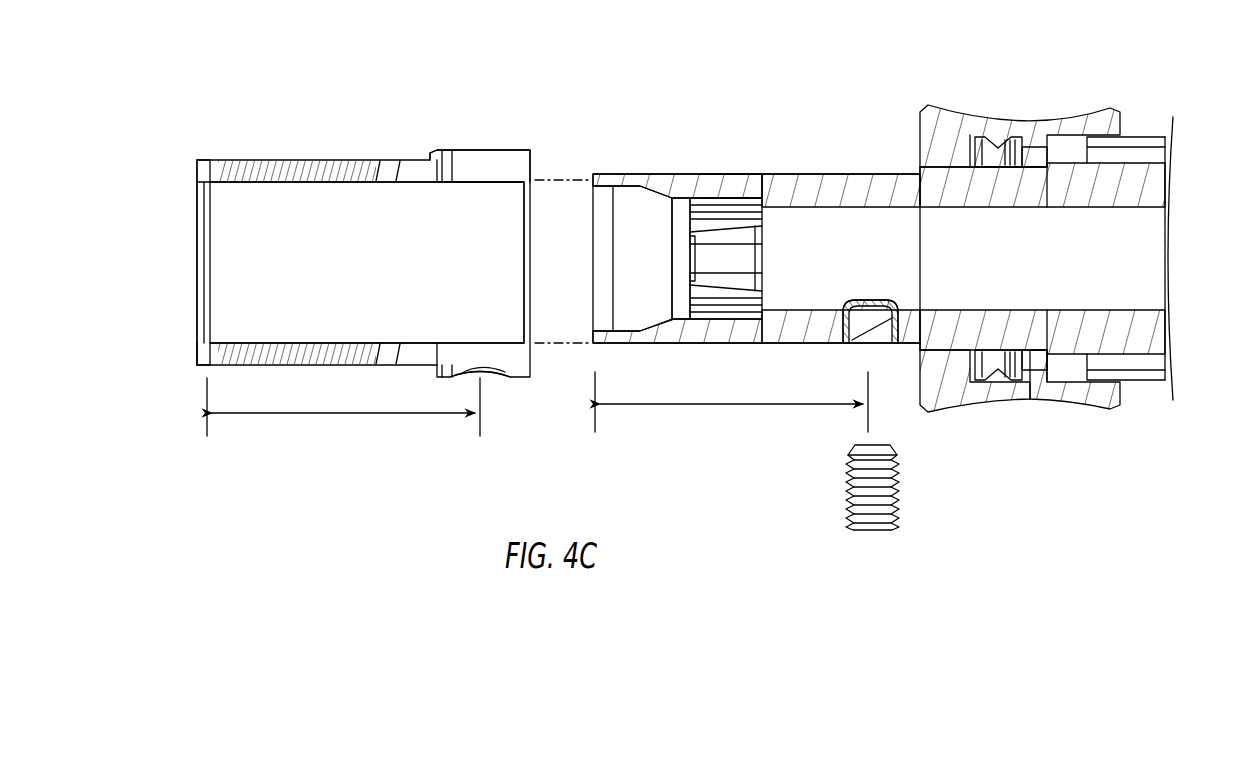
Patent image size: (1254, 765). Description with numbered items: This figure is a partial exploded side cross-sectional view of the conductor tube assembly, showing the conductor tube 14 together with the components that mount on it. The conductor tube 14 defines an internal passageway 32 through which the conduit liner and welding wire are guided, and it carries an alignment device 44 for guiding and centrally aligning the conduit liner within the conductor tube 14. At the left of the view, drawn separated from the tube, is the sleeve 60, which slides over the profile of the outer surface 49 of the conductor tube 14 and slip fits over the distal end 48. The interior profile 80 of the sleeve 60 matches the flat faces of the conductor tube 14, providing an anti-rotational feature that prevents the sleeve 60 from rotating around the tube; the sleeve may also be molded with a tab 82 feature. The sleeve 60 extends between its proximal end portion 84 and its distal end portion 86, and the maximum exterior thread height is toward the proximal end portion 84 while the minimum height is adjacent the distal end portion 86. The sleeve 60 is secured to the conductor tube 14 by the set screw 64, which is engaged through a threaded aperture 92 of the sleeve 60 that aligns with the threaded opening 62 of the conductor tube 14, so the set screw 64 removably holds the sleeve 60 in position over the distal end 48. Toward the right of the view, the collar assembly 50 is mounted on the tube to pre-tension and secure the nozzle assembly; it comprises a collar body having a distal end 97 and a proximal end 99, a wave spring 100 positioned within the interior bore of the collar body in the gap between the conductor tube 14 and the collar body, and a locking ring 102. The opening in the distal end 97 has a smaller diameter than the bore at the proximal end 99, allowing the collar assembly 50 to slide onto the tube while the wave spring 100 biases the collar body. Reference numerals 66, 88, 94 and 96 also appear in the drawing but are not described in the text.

The conductor tube 14 is at (856, 175).
The internal passageway 32 is at (1175, 245).
The alignment device 44 is at (762, 200).
The distal end 48 is at (611, 176).
The outer surface 49 is at (741, 175).
The collar assembly 50 is at (1040, 115).
The sleeve 60 is at (468, 160).
The threaded opening 62 is at (873, 320).
The set screw 64 is at (848, 500).
The ferrule wall 66 is at (650, 186).
The interior profile 80 is at (240, 233).
The tab 82 is at (197, 179).
The proximal end portion 84 is at (533, 372).
The distal end portion 86 is at (193, 356).
The inner wall 88 is at (237, 296).
The threaded aperture 92 is at (478, 368).
The sleeve length 94 is at (290, 414).
The body length 96 is at (728, 406).
The distal end 97 is at (962, 415).
The proximal end 99 is at (1115, 409).
The wave spring 100 is at (995, 150).
The locking ring 102 is at (1050, 372).